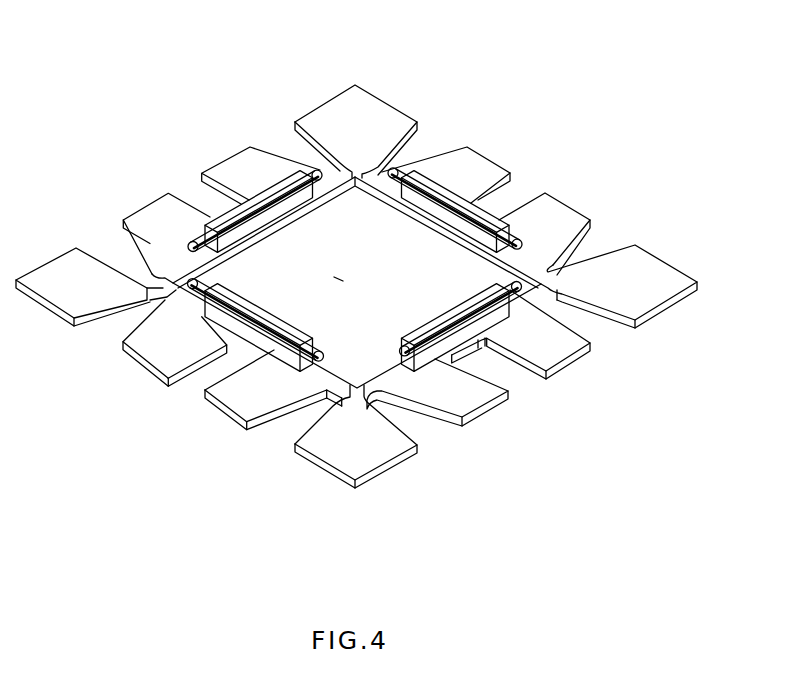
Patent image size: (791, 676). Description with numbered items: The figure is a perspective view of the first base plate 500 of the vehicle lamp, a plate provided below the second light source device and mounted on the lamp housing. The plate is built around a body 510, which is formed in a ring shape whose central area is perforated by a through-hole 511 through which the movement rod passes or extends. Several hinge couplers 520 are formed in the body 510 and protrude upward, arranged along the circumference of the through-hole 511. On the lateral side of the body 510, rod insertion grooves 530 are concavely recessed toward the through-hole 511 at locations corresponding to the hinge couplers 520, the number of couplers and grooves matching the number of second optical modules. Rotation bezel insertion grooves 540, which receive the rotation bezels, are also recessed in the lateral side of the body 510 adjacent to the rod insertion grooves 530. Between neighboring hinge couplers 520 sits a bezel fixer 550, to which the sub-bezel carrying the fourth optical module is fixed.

The first base plate 500 is at (175, 33).
The body 510 is at (372, 177).
The through-hole 511 is at (338, 277).
The hinge coupler 520 is at (432, 188).
The rod insertion groove 530 is at (202, 377).
The rotation bezel insertion groove 540 is at (422, 437).
The bezel fixer 550 is at (625, 270).